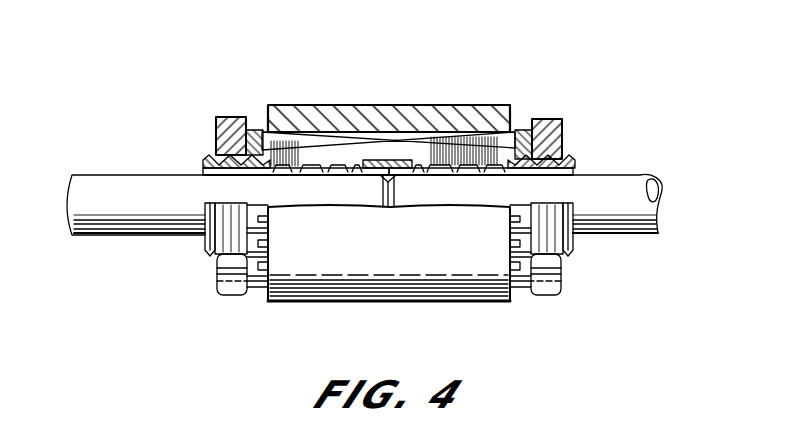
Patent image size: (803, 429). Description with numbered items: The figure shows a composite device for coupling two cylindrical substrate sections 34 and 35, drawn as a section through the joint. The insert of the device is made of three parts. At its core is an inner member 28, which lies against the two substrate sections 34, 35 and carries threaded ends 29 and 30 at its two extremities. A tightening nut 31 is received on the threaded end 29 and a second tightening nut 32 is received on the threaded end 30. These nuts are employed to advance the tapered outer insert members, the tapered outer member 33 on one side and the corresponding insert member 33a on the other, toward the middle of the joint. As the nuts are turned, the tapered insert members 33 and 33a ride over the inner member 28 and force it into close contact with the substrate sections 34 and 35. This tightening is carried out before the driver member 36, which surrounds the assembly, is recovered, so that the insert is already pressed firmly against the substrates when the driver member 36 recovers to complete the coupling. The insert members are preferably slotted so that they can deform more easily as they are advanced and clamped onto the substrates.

The inner member 28 is at (446, 140).
The threaded end 29 is at (205, 168).
The threaded end 30 is at (574, 168).
The tightening nut 31 is at (216, 132).
The tightening nut 32 is at (562, 140).
The tapered outer member 33 is at (262, 132).
The insert member 33a is at (518, 130).
The substrate section 34 is at (149, 222).
The substrate section 35 is at (643, 236).
The driver member 36 is at (375, 160).